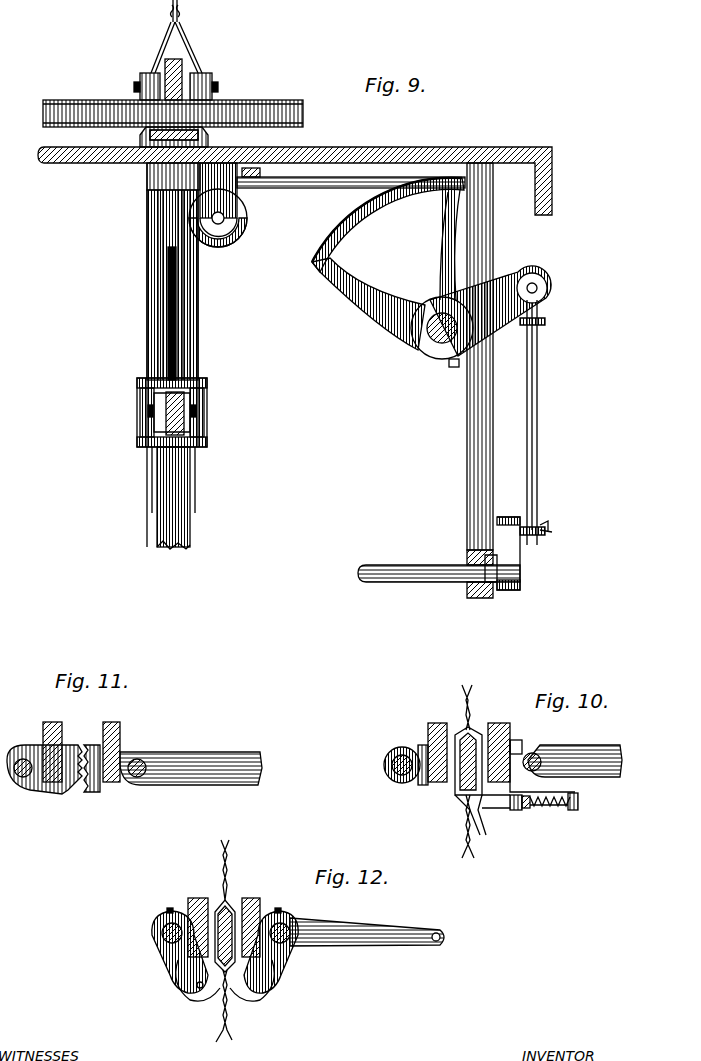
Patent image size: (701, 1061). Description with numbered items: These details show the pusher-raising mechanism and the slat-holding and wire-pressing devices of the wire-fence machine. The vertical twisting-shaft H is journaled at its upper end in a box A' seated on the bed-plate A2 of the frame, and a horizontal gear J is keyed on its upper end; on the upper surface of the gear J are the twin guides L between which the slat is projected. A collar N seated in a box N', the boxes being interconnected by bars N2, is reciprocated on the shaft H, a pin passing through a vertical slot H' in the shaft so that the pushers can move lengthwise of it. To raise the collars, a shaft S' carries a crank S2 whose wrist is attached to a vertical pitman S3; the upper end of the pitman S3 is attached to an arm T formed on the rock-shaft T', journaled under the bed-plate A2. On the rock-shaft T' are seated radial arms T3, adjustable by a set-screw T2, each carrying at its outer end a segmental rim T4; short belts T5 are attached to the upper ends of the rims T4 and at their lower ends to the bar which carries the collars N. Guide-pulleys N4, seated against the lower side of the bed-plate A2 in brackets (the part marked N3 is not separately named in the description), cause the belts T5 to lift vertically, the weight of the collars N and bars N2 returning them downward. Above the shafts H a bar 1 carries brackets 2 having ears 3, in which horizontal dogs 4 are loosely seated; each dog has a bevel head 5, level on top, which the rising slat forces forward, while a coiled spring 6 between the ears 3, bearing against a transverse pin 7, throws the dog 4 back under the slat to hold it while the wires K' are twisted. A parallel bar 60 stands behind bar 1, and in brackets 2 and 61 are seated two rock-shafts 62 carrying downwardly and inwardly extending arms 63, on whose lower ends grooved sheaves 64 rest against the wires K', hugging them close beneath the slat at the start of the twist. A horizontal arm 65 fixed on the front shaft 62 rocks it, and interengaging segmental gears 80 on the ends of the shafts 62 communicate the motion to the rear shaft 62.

In FIG. 9, the twin guides L is at (150, 80).
In FIG. 9, the horizontal gear J is at (303, 110).
In FIG. 9, the box A' is at (185, 137).
In FIG. 9, the bed-plate A2 is at (295, 170).
In FIG. 9, the wire K' is at (172, 355).
In FIG. 10, the wire K' is at (464, 777).
In FIG. 12, the wire K' is at (217, 947).
In FIG. 9, the vertical slot H' is at (148, 313).
In FIG. 9, the collar N is at (179, 409).
In FIG. 9, the box N' is at (150, 413).
In FIG. 9, the bar N2 is at (166, 432).
In FIG. 9, the vertical shaft H is at (179, 498).
In FIG. 9, the pulley bracket N3 is at (216, 238).
In FIG. 9, the guide-pulley N4 is at (236, 248).
In FIG. 9, the short belt T5 is at (351, 188).
In FIG. 9, the segmental rim T4 is at (365, 215).
In FIG. 9, the radial arm T3 is at (441, 245).
In FIG. 9, the rock-shaft T' is at (392, 314).
In FIG. 9, the arm T is at (490, 311).
In FIG. 9, the set-screw T2 is at (456, 372).
In FIG. 9, the vertical pitman S3 is at (538, 422).
In FIG. 9, the shaft S' is at (439, 565).
In FIG. 9, the crank S2 is at (520, 575).
In FIG. 11, the bar 60 is at (52, 722).
In FIG. 10, the bar 60 is at (435, 743).
In FIG. 12, the bar 60 is at (197, 898).
In FIG. 11, the bar 1 is at (116, 722).
In FIG. 10, the bar 1 is at (497, 723).
In FIG. 12, the bar 1 is at (250, 898).
In FIG. 10, the bracket 2 is at (514, 740).
In FIG. 10, the ear 3 is at (560, 760).
In FIG. 10, the horizontal dog 4 is at (501, 805).
In FIG. 10, the bevel head 5 is at (474, 789).
In FIG. 10, the coiled spring 6 is at (550, 808).
In FIG. 10, the transverse pin 7 is at (526, 810).
In FIG. 10, the bracket 61 is at (406, 748).
In FIG. 11, the rock-shaft 62 is at (14, 778).
In FIG. 10, the rock-shaft 62 is at (400, 775).
In FIG. 12, the rock-shaft 62 is at (160, 922).
In FIG. 12, the arm 63 is at (165, 962).
In FIG. 12, the sheave 64 is at (190, 1000).
In FIG. 11, the horizontal arm 65 is at (191, 768).
In FIG. 10, the horizontal arm 65 is at (575, 761).
In FIG. 12, the horizontal arm 65 is at (367, 926).
In FIG. 11, the segmental gear 80 is at (72, 790).